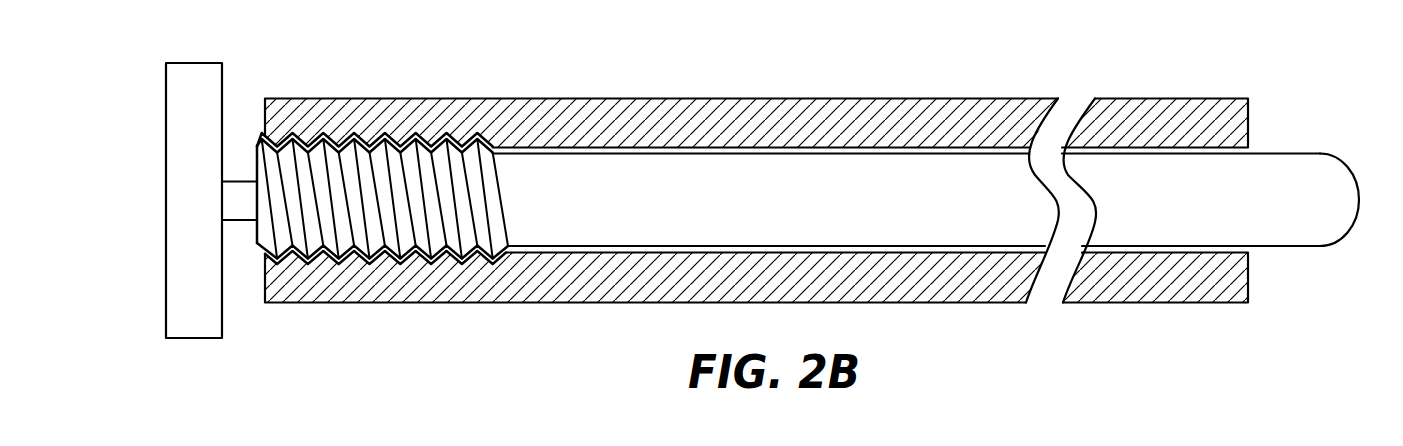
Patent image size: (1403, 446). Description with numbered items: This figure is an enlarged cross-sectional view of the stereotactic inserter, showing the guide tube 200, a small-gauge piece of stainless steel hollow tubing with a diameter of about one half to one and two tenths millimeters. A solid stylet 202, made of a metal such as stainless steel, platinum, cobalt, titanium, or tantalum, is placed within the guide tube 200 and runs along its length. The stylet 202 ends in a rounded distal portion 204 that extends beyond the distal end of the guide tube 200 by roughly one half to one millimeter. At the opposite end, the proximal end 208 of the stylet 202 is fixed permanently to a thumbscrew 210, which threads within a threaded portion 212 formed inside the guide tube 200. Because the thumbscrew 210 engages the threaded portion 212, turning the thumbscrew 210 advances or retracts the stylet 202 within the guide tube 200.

The guide tube 200 is at (870, 112).
The stylet 202 is at (953, 200).
The rounded distal portion 204 is at (1330, 178).
The proximal end 208 is at (489, 197).
The thumbscrew 210 is at (193, 325).
The threaded portion 212 is at (365, 98).